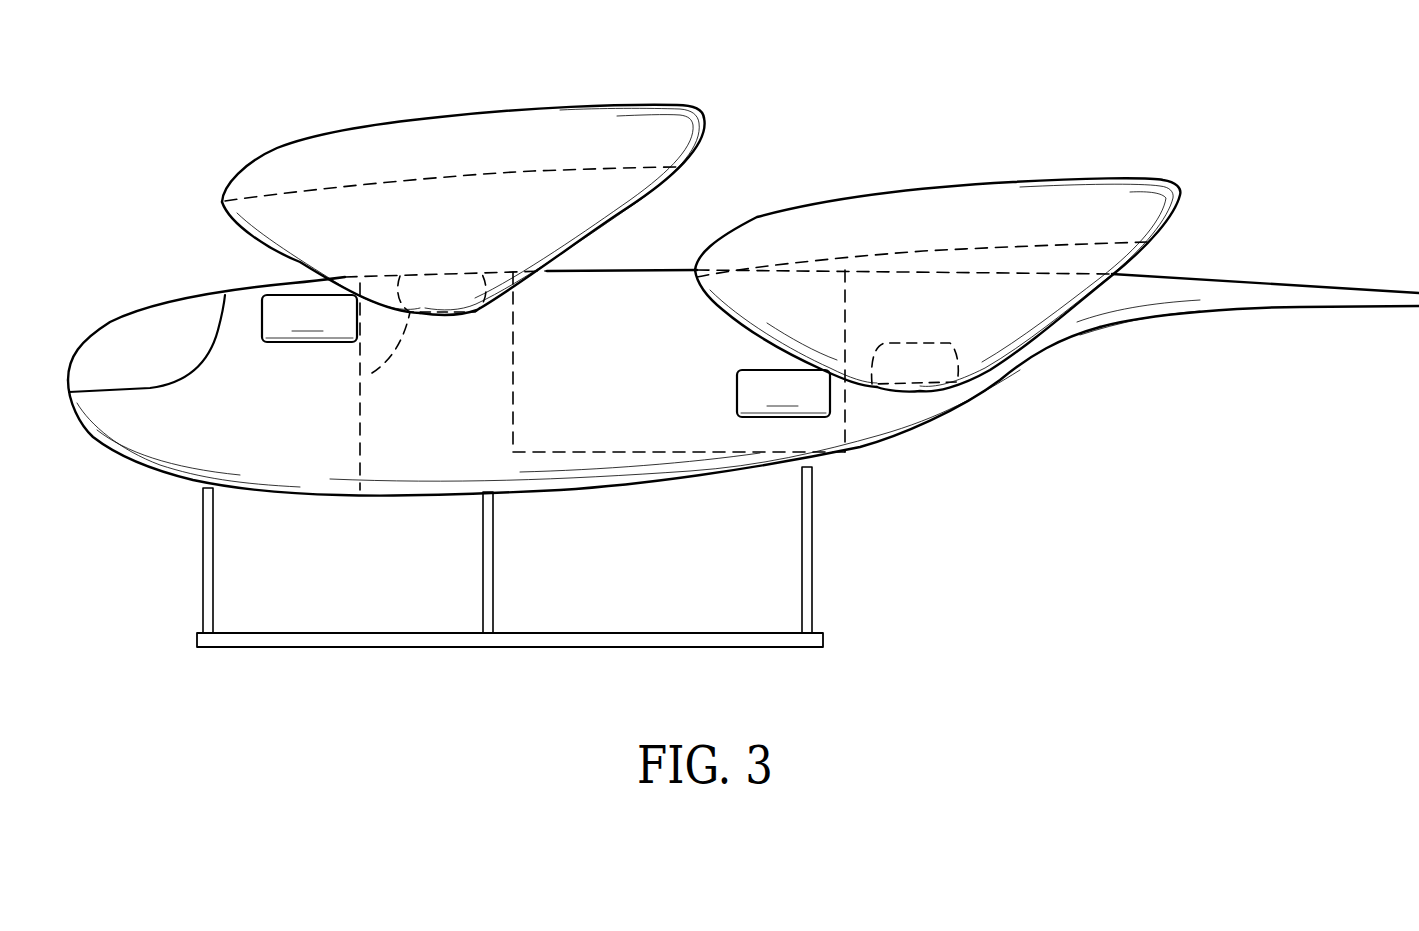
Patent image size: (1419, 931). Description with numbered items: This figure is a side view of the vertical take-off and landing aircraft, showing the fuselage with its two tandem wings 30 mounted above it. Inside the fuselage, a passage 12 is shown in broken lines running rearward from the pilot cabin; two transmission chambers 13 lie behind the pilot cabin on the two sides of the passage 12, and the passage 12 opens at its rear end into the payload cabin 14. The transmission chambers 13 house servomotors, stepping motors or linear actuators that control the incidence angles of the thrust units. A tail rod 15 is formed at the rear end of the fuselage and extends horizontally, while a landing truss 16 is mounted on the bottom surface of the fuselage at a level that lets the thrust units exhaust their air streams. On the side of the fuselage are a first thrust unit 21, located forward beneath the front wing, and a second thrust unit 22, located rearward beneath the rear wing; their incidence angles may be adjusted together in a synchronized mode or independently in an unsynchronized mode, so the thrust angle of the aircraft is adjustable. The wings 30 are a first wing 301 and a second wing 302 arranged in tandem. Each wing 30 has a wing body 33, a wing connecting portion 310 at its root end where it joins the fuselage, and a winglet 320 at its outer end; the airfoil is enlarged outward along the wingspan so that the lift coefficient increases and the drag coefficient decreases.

The wing 30 is at (471, 215).
The winglet 320 is at (437, 133).
The wing body 33 is at (522, 196).
The first wing 301 is at (265, 225).
The second wing 302 is at (1043, 312).
The wing connecting portion 310 is at (370, 374).
The first thrust unit 21 is at (280, 340).
The second thrust unit 22 is at (797, 413).
The passage 12 is at (387, 432).
The transmission chamber 13 is at (467, 425).
The payload cabin 14 is at (650, 437).
The tail rod 15 is at (1322, 298).
The landing truss 16 is at (373, 640).